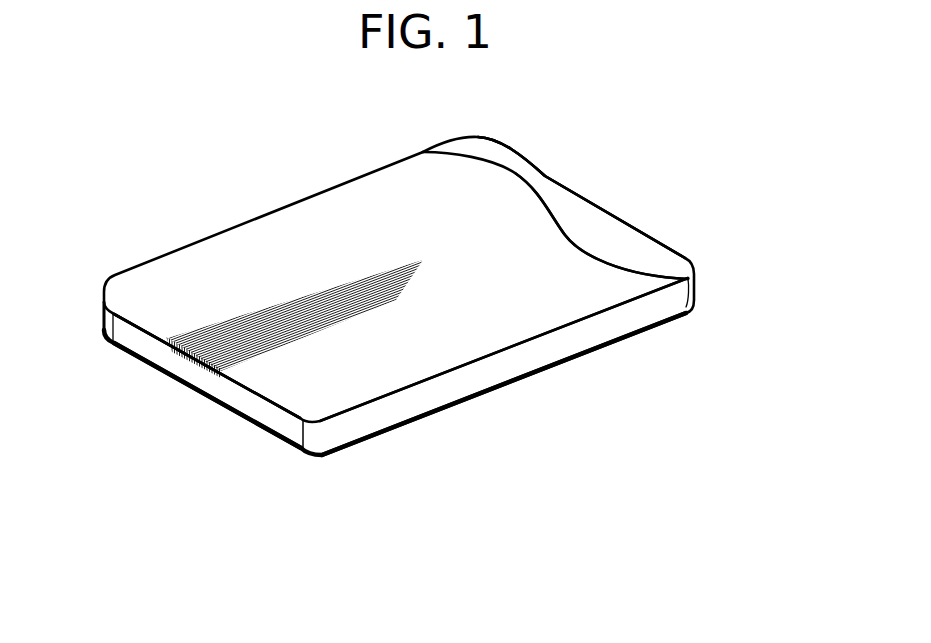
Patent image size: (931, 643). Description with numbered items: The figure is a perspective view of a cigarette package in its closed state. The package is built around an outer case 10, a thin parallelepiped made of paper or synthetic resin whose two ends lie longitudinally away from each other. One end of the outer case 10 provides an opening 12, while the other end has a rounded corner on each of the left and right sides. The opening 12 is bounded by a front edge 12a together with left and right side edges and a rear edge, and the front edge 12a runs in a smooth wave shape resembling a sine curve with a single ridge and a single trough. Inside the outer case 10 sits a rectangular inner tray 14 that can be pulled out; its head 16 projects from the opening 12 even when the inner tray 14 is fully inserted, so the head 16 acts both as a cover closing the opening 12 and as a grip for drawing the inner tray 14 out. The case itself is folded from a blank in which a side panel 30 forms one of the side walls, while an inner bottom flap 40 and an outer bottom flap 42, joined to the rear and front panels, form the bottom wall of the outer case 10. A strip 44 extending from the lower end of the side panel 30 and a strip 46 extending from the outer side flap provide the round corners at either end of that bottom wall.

The outer case 10 is at (567, 384).
The opening 12 is at (599, 225).
The front edge 12a is at (557, 220).
The inner tray 14 is at (623, 227).
The head 16 is at (623, 227).
The side panel 30 is at (485, 375).
The inner bottom flap 40 is at (220, 385).
The outer bottom flap 42 is at (220, 385).
The strip 44 is at (312, 440).
The strip 46 is at (108, 318).